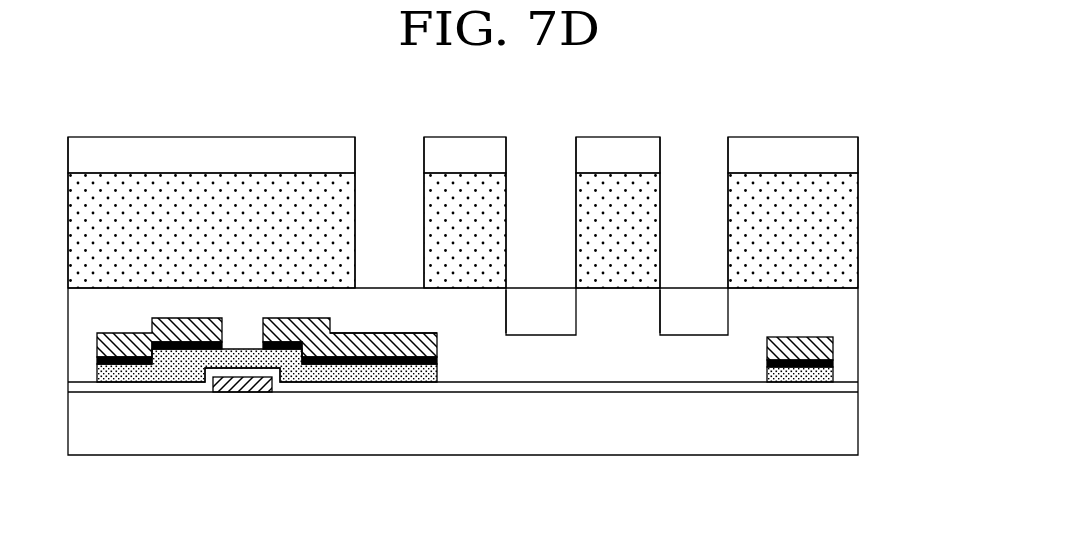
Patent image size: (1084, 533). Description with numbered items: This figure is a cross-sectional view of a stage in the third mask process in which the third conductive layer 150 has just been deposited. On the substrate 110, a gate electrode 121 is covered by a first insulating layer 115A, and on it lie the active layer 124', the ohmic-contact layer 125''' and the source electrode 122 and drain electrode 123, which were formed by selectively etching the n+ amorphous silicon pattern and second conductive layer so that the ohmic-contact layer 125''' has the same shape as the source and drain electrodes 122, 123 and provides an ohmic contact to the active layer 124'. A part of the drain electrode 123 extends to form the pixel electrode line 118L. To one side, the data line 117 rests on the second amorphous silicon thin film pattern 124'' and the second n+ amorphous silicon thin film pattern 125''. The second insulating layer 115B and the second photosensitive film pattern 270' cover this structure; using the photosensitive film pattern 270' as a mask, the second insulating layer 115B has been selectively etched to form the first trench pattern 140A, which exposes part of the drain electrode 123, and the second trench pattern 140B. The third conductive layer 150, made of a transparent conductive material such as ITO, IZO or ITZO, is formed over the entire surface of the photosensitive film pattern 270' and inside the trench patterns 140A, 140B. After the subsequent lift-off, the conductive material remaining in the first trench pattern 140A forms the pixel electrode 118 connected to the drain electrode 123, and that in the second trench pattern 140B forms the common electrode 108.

The substrate 110 is at (852, 425).
The first gate insulating layer 115A is at (850, 390).
The second insulating layer 115B is at (855, 307).
The data line 117 is at (833, 348).
The pixel electrode 118 is at (538, 315).
The pixel electrode line 118L is at (385, 333).
The gate electrode 121 is at (240, 385).
The source electrode 122 is at (201, 318).
The drain electrode 123 is at (287, 318).
The active layer 124' is at (267, 428).
The second amorphous silicon thin film pattern 124'' is at (798, 437).
The second n+ amorphous silicon thin film pattern 125'' is at (807, 434).
The ohmic-contact layer 125''' is at (267, 424).
The common electrode 108 is at (697, 315).
The first trench pattern 140A is at (503, 312).
The second trench pattern 140B is at (657, 312).
The third conductive layer 150 is at (855, 161).
The second photosensitive film pattern 270' is at (501, 230).